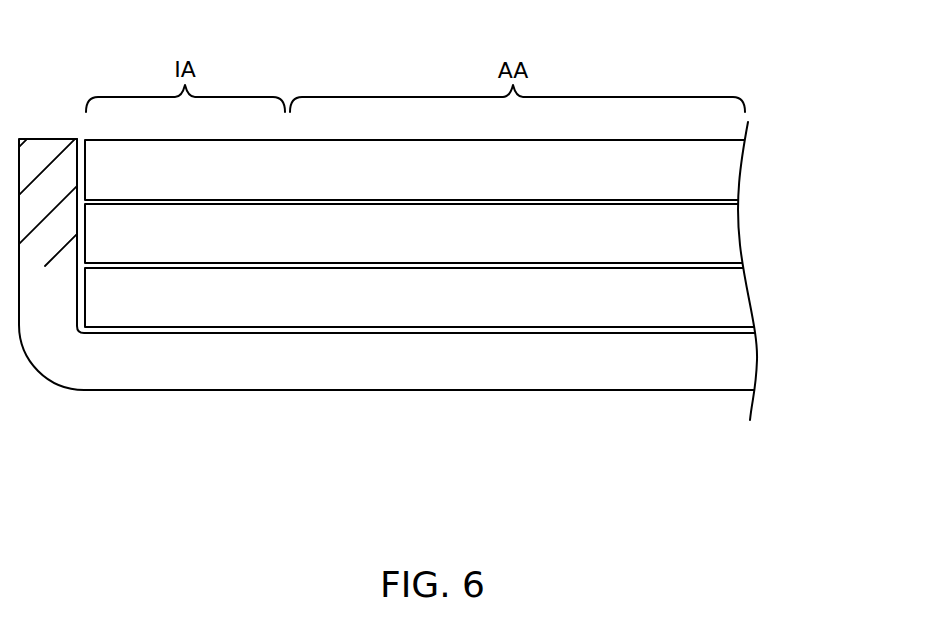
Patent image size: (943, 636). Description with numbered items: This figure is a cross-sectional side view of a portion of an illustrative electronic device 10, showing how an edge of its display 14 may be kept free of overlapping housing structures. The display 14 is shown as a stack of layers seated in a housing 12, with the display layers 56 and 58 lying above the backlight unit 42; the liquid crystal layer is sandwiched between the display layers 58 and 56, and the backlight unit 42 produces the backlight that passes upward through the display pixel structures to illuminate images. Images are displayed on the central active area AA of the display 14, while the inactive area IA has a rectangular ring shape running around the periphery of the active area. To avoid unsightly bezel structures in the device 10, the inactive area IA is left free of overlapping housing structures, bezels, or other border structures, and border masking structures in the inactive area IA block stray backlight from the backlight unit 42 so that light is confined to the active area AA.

The electronic device 10 is at (818, 120).
The housing 12 is at (490, 391).
The display 14 is at (659, 73).
The backlight unit 42 is at (743, 292).
The display layer 56 is at (725, 168).
The display layer 58 is at (730, 230).